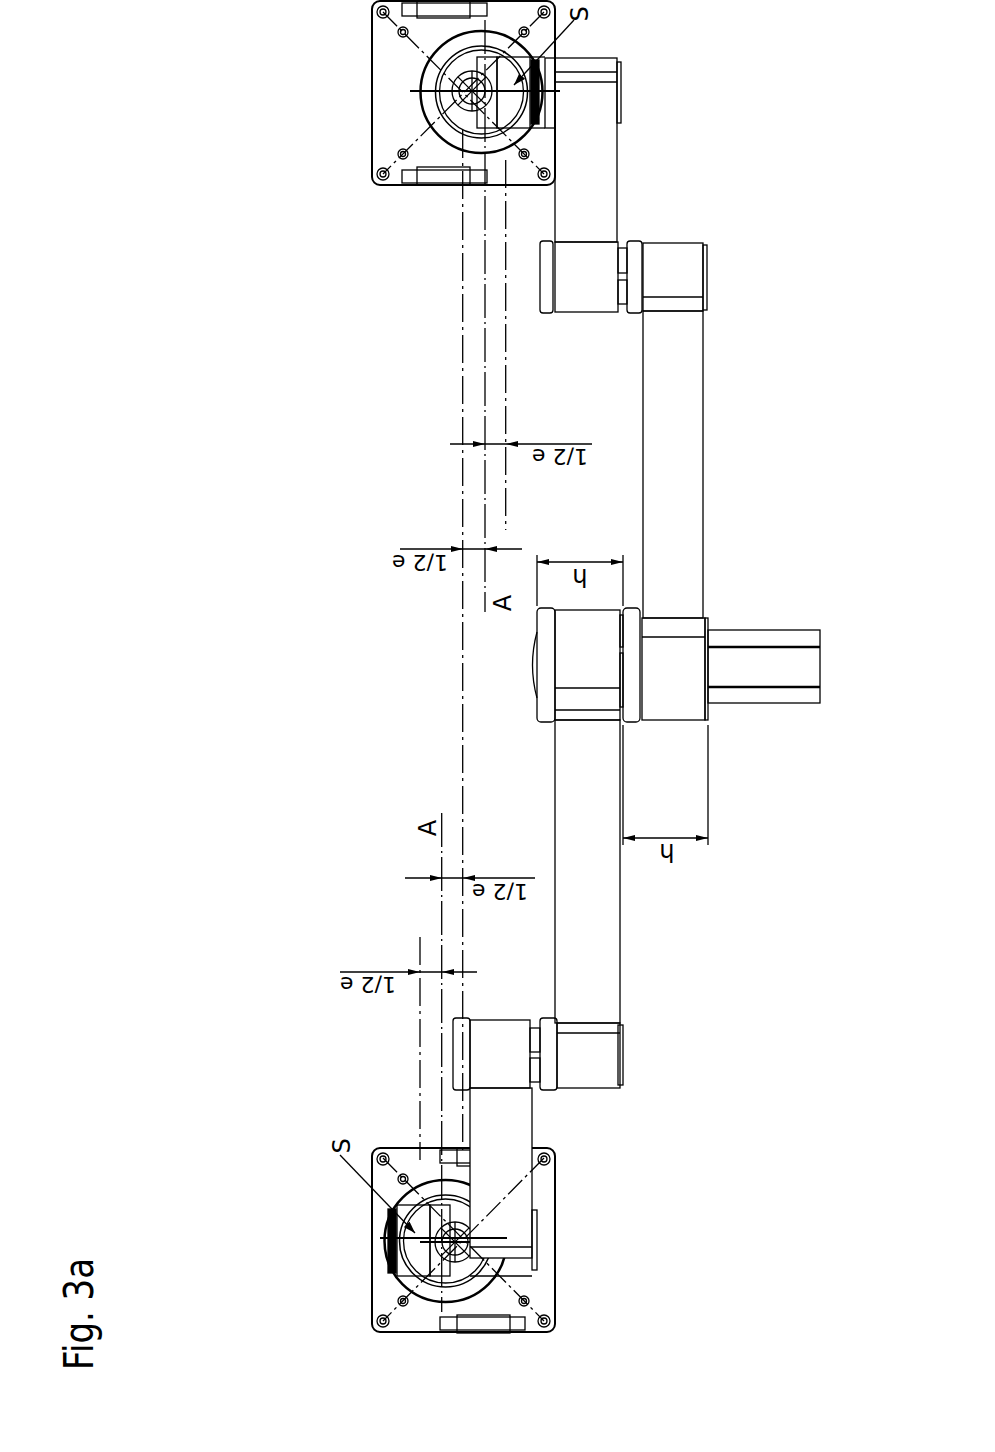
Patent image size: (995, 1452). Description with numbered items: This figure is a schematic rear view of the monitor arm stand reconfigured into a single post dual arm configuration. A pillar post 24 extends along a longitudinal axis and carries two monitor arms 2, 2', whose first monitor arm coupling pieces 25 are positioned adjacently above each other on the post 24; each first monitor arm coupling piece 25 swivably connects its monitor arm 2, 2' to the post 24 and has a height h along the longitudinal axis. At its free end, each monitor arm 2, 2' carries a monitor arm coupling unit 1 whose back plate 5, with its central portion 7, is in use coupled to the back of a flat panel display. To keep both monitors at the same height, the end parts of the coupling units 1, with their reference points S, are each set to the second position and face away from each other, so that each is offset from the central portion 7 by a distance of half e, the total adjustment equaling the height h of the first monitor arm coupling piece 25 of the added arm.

The monitor arm coupling unit 1 is at (270, 128).
The monitor arm 2 is at (743, 371).
The second arm segment 2' is at (692, 967).
The back plate 5 is at (398, 56).
The central portion 7 is at (463, 666).
The post 24 is at (777, 638).
The first monitor arm coupling piece 25 is at (623, 698).